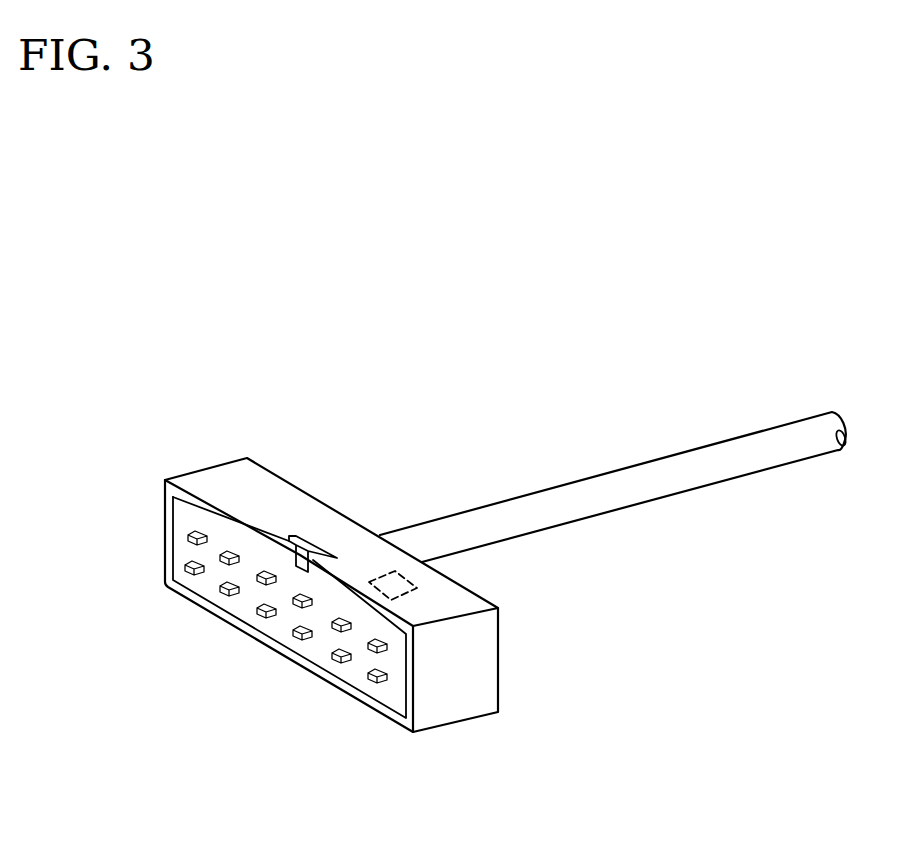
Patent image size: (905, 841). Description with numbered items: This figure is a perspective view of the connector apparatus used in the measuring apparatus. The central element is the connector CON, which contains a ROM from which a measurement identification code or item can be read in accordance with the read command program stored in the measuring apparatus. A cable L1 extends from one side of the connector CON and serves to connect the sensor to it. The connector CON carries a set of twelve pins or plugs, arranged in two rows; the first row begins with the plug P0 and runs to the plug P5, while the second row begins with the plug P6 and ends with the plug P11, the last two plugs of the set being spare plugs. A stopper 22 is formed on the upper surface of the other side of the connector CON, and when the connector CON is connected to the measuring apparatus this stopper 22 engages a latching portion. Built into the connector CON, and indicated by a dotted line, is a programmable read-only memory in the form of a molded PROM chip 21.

The connector CON is at (488, 670).
The stopper 22 is at (302, 540).
The molded PROM chip 21 is at (420, 591).
The cable L1 is at (647, 472).
The plug P0 is at (192, 541).
The plug P5 is at (373, 652).
The plug P6 is at (193, 572).
The spare plug P11 is at (385, 680).